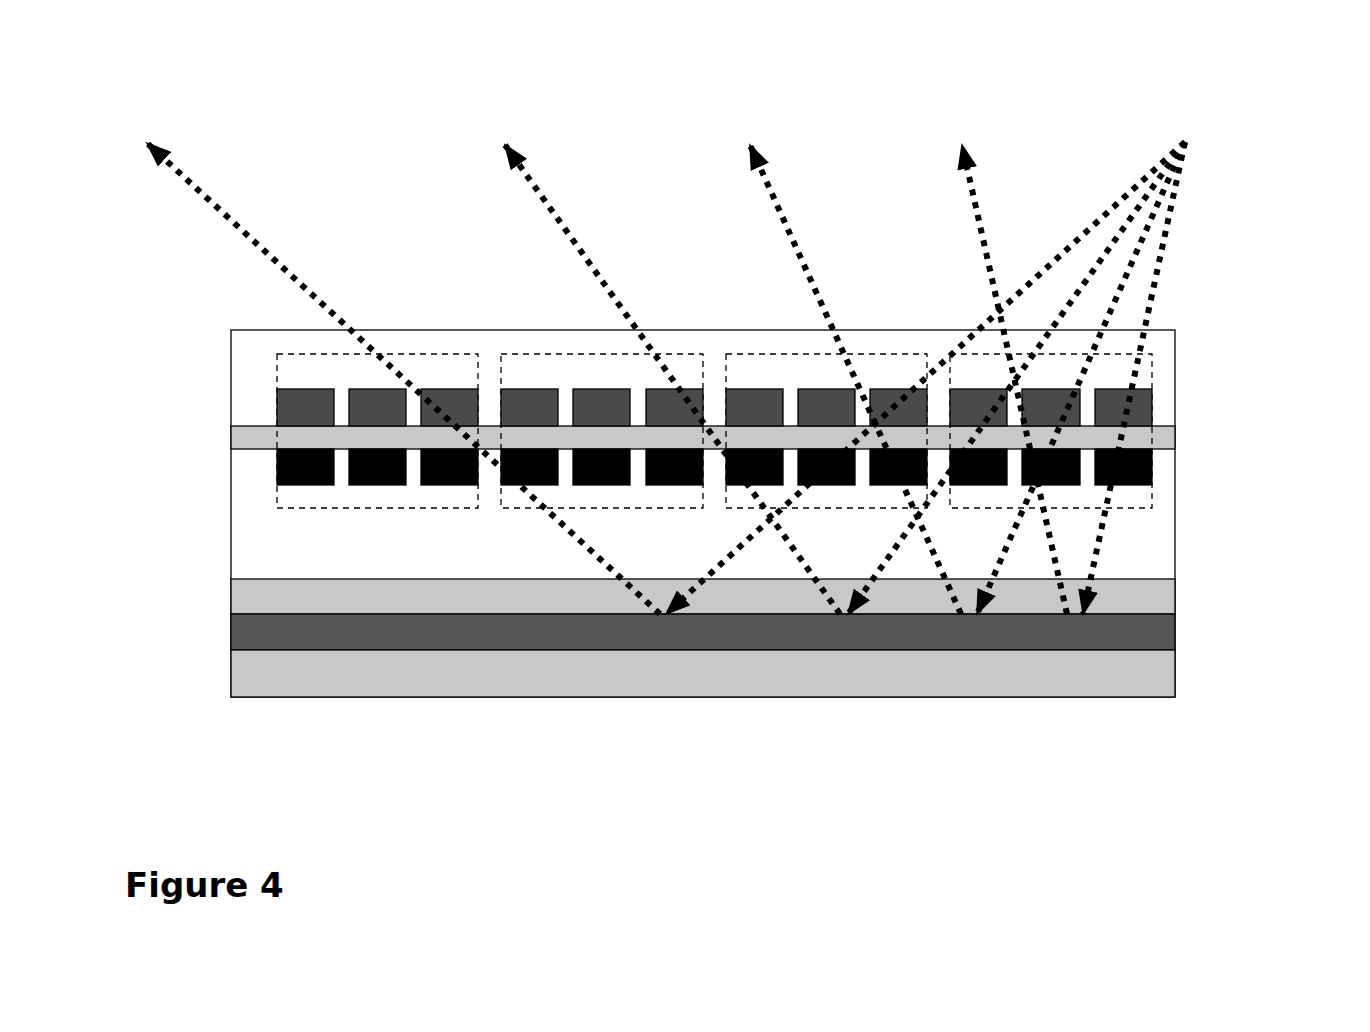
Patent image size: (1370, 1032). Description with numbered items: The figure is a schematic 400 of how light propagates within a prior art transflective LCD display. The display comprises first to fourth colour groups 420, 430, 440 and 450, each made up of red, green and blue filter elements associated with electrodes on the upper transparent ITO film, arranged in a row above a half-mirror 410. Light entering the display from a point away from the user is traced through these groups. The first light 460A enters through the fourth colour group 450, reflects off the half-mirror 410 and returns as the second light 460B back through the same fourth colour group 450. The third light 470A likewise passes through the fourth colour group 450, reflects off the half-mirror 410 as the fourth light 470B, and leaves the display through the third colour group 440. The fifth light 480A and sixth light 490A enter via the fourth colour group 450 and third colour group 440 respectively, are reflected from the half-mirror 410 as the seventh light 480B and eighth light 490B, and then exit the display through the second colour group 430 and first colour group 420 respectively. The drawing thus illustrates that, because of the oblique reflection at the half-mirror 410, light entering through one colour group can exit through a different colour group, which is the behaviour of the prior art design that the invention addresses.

The schematic 400 is at (924, 782).
The half-mirror 410 is at (231, 628).
The first colour group 420 is at (277, 354).
The second colour group 430 is at (501, 354).
The third colour group 440 is at (726, 354).
The fourth colour group 450 is at (1140, 508).
The first light 460A is at (1173, 272).
The third light 470A is at (1127, 295).
The fifth light 480A is at (1080, 262).
The sixth light 490A is at (1117, 188).
The second light 460B is at (987, 355).
The fourth light 470B is at (830, 355).
The seventh light 480B is at (637, 355).
The eighth light 490B is at (400, 355).